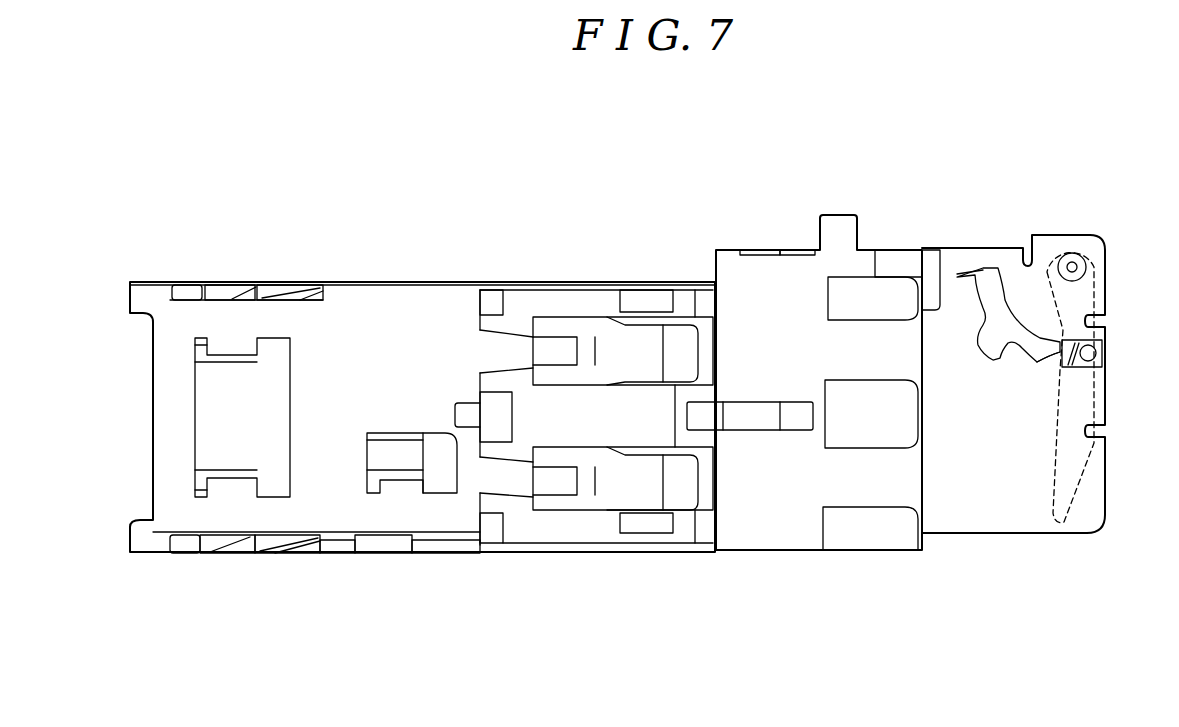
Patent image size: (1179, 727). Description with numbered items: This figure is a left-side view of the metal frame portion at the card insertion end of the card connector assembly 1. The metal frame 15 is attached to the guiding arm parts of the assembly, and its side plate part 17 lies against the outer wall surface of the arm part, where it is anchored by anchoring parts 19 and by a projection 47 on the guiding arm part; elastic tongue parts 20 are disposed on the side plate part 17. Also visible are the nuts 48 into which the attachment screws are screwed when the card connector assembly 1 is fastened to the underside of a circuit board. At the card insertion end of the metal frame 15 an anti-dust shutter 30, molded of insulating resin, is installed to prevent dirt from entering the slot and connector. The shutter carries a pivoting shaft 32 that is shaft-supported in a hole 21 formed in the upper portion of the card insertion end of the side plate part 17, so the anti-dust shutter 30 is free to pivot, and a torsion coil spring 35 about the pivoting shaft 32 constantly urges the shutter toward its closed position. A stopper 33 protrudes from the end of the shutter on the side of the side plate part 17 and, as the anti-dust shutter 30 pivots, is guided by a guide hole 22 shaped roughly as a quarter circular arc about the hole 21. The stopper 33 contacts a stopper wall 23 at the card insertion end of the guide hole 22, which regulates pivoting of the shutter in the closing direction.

The card connector assembly 1 is at (737, 207).
The metal frame 15 is at (436, 282).
The side plate part 17 is at (378, 312).
The anchoring parts 19 is at (225, 473).
The elastic tongue parts 20 is at (592, 478).
The hole 21 is at (1057, 250).
The guide hole 22 is at (992, 357).
The stopper wall 23 is at (1104, 362).
The anti-dust shutter 30 is at (1085, 457).
The pivoting shaft 32 is at (1077, 265).
The stopper 33 is at (1096, 352).
The torsion coil spring 35 is at (1047, 358).
The projection 47 is at (470, 418).
The nuts 48 is at (752, 420).